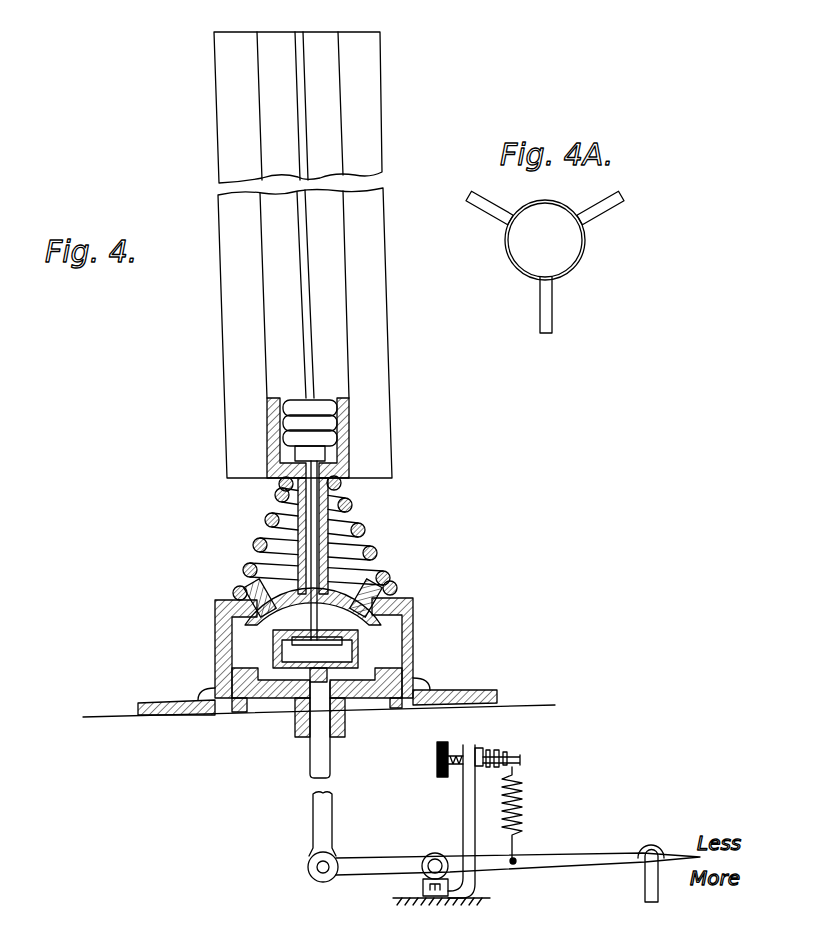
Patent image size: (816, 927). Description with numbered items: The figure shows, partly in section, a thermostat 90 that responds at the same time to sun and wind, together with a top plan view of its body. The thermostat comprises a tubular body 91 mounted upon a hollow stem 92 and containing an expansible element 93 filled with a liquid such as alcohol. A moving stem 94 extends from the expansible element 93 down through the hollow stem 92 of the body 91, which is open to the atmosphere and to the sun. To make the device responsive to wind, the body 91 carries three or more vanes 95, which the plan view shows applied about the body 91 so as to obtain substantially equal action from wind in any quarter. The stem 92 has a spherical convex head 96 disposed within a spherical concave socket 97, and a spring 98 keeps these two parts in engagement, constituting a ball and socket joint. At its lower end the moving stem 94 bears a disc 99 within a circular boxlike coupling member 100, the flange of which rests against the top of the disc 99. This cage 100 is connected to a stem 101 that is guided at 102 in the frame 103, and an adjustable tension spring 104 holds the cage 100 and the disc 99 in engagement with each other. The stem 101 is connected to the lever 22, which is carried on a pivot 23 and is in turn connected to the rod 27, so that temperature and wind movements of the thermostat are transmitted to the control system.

In FIG. 4, the thermostat 90 is at (205, 103).
In FIG. 4A, the thermostat 90 is at (587, 275).
In FIG. 4, the tubular body 91 is at (266, 132).
In FIG. 4A, the tubular body 91 is at (512, 247).
In FIG. 4, the vanes 95 is at (368, 150).
In FIG. 4A, the vanes 95 is at (610, 208).
In FIG. 4, the expansible element 93 is at (283, 430).
In FIG. 4, the moving stem 94 is at (322, 488).
In FIG. 4, the stem 92 is at (336, 512).
In FIG. 4, the spring 98 is at (262, 548).
In FIG. 4, the spherical convex head 96 is at (385, 586).
In FIG. 4, the spherical concave socket 97 is at (243, 592).
In FIG. 4, the disc 99 is at (273, 648).
In FIG. 4, the coupling member 100 is at (362, 651).
In FIG. 4, the frame 103 is at (413, 670).
In FIG. 4, the guide 102 is at (300, 722).
In FIG. 4, the stem 101 is at (330, 762).
In FIG. 4, the lever 22 is at (393, 860).
In FIG. 4, the pivot 23 is at (420, 873).
In FIG. 4, the tension spring 104 is at (522, 800).
In FIG. 4, the rod 27 is at (648, 878).